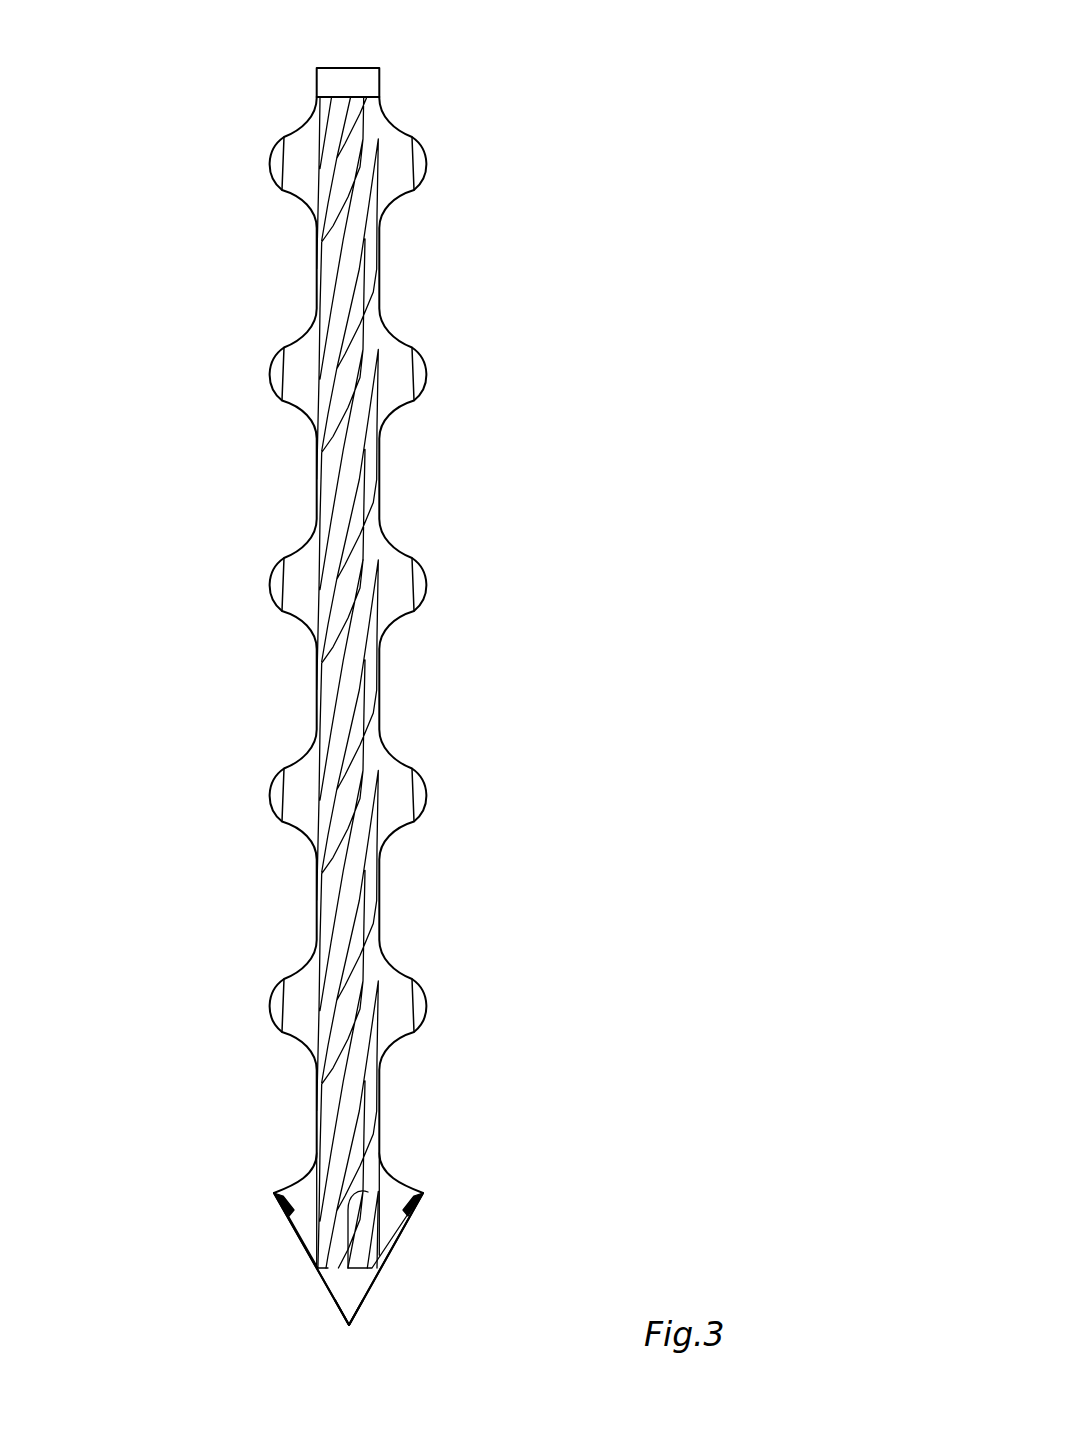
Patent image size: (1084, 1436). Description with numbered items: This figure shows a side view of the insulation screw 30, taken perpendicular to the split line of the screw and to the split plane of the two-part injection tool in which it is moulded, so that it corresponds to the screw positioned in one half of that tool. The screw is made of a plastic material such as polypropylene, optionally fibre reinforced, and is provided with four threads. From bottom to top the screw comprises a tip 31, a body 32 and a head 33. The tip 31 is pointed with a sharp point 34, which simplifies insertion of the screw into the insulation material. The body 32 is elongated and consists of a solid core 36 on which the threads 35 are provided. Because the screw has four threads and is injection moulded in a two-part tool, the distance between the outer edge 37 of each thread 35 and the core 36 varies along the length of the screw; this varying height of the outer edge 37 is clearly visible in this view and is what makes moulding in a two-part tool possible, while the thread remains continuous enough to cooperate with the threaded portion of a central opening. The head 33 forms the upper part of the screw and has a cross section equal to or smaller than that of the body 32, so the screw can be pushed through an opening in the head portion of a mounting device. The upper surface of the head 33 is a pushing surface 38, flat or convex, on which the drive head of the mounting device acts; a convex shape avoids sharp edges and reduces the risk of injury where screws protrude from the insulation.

The anchor device 30 is at (573, 196).
The tip 31 is at (468, 1236).
The body 32 is at (525, 541).
The head 33 is at (436, 87).
The sharp point 34 is at (380, 1322).
The thread 35 is at (397, 790).
The core 36 is at (350, 463).
The outer edge of a thread 37 is at (447, 596).
The pushing surface 38 is at (366, 58).